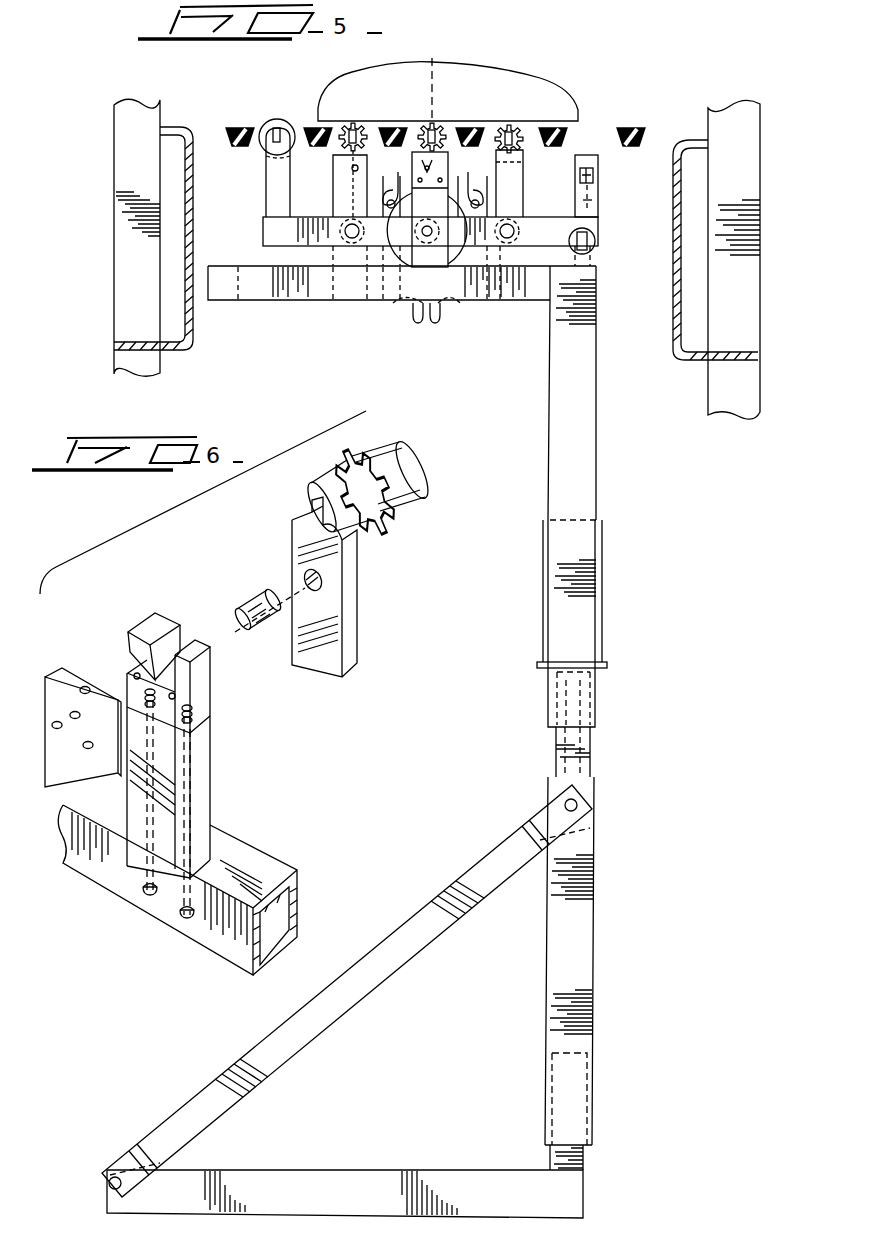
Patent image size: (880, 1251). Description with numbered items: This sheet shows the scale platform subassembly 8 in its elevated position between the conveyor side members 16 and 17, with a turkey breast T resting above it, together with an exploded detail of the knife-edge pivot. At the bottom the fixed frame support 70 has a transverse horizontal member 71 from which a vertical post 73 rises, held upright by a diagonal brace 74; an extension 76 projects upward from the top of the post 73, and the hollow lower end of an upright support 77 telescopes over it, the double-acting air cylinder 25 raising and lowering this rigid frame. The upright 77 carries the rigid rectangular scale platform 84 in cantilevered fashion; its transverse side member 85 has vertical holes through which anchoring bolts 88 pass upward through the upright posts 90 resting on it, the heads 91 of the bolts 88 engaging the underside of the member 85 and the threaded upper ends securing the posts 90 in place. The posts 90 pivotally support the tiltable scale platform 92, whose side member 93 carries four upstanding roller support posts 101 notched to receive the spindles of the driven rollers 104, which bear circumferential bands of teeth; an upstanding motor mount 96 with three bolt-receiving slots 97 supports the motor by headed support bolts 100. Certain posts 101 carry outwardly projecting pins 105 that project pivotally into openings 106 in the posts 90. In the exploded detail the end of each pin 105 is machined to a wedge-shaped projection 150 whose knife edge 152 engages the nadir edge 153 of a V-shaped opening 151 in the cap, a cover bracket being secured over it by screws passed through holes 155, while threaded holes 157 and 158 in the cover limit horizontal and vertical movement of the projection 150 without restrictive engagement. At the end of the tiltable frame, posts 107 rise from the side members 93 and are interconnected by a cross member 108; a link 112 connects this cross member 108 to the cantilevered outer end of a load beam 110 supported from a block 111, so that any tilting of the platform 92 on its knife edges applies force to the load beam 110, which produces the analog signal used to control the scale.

In FIG. 5, the scale platform subassembly 8 is at (465, 74).
In FIG. 5, the turkey breast T is at (496, 63).
In FIG. 5, the side member 16 is at (160, 102).
In FIG. 5, the side member 17 is at (708, 128).
In FIG. 5, the double-acting air cylinder 25 is at (602, 582).
In FIG. 5, the fixed frame support 70 is at (382, 742).
In FIG. 5, the transverse horizontal member 71 is at (356, 1170).
In FIG. 5, the vertical post 73 is at (547, 942).
In FIG. 5, the brace 74 is at (487, 852).
In FIG. 5, the extension 76 is at (592, 750).
In FIG. 5, the upright support 77 is at (598, 422).
In FIG. 5, the rigid rectangular scale platform 84 is at (402, 307).
In FIG. 5, the side member 85 is at (530, 302).
In FIG. 6, the side member 85 is at (247, 852).
In FIG. 5, the anchoring bolt 88 is at (410, 302).
In FIG. 6, the upright post 90 is at (170, 759).
In FIG. 5, the head 91 is at (438, 305).
In FIG. 5, the tiltable scale platform 92 is at (262, 231).
In FIG. 5, the side member 93 is at (547, 248).
In FIG. 5, the motor mount 96 is at (392, 182).
In FIG. 5, the bolt-receiving slot 97 is at (470, 182).
In FIG. 5, the headed support bolt 100 is at (496, 198).
In FIG. 5, the roller support post 101 is at (266, 188).
In FIG. 6, the roller support post 101 is at (358, 605).
In FIG. 6, the driven roller 104 is at (392, 445).
In FIG. 5, the pin 105 is at (350, 178).
In FIG. 6, the pin 105 is at (258, 621).
In FIG. 5, the opening 106 is at (352, 168).
In FIG. 5, the post 107 is at (598, 172).
In FIG. 5, the cross member 108 is at (622, 163).
In FIG. 5, the load beam 110 is at (596, 240).
In FIG. 5, the block 111 is at (600, 265).
In FIG. 5, the link 112 is at (586, 205).
In FIG. 6, the wedge-shaped projection 150 is at (258, 642).
In FIG. 6, the V-shaped opening 151 is at (160, 652).
In FIG. 6, the knife edge 152 is at (238, 625).
In FIG. 6, the nadir edge 153 is at (153, 678).
In FIG. 6, the hole 155 is at (86, 748).
In FIG. 6, the threaded hole 157 is at (77, 713).
In FIG. 6, the threaded hole 158 is at (82, 688).